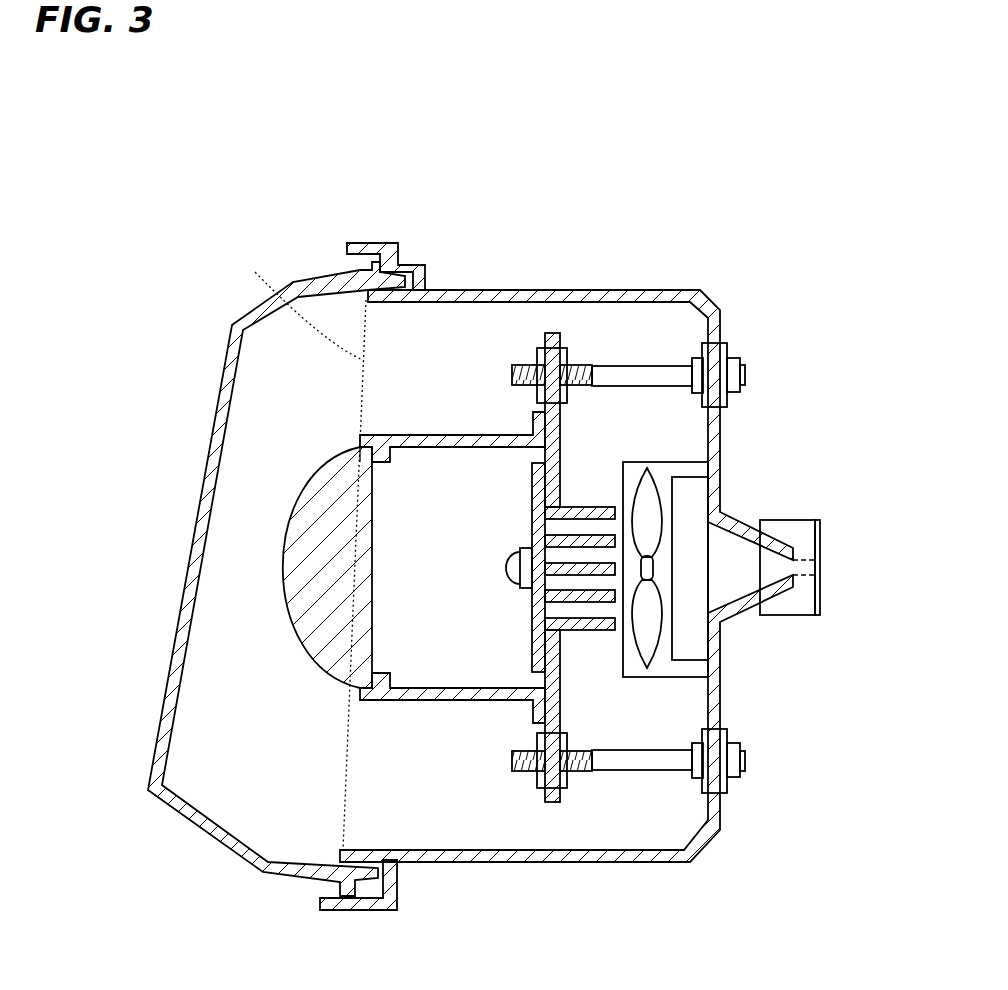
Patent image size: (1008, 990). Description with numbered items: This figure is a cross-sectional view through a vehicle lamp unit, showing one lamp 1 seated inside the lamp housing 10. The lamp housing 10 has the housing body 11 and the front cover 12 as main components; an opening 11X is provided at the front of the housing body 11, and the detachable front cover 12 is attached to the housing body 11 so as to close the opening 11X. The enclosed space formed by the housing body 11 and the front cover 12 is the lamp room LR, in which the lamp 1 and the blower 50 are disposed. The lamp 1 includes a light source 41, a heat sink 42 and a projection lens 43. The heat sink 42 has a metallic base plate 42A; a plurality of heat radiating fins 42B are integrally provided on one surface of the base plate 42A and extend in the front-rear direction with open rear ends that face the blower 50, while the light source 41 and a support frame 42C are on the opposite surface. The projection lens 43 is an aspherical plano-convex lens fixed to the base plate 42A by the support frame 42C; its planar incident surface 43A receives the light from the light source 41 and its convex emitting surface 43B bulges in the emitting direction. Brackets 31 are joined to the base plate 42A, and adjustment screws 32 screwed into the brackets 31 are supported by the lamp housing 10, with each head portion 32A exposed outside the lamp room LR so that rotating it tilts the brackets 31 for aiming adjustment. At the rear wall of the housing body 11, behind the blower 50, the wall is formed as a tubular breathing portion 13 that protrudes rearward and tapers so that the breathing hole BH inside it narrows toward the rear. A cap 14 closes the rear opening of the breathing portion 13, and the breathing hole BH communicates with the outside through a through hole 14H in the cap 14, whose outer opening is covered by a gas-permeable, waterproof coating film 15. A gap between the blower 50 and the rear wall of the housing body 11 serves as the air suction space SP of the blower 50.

The lamp 1 is at (155, 142).
The lamp housing 10 is at (415, 162).
The housing body 11 is at (450, 290).
The opening 11X is at (297, 546).
The front cover 12 is at (338, 268).
The breathing portion 13 is at (772, 647).
The cap 14 is at (797, 608).
The through hole 14H is at (802, 560).
The coating film 15 is at (815, 523).
The bracket 31 is at (562, 346).
The adjustment screw 32 is at (645, 375).
The head portion 32A is at (733, 360).
The light source 41 is at (507, 568).
The heat sink 42 is at (523, 553).
The base plate 42A is at (553, 335).
The heat radiating fins 42B is at (602, 505).
The support frame 42C is at (462, 437).
The projection lens 43 is at (312, 623).
The incident surface 43A is at (383, 497).
The emitting surface 43B is at (275, 548).
The blower 50 is at (698, 660).
The air suction space SP is at (690, 500).
The breathing hole BH is at (732, 557).
The lamp room LR is at (225, 798).